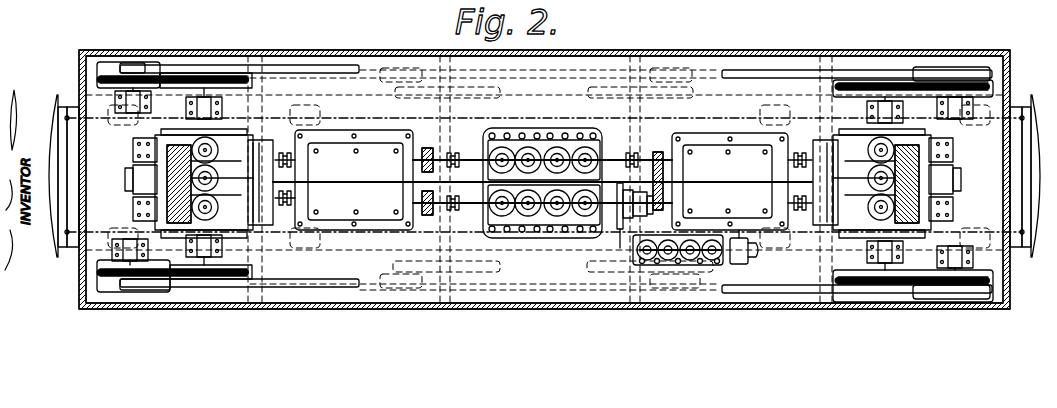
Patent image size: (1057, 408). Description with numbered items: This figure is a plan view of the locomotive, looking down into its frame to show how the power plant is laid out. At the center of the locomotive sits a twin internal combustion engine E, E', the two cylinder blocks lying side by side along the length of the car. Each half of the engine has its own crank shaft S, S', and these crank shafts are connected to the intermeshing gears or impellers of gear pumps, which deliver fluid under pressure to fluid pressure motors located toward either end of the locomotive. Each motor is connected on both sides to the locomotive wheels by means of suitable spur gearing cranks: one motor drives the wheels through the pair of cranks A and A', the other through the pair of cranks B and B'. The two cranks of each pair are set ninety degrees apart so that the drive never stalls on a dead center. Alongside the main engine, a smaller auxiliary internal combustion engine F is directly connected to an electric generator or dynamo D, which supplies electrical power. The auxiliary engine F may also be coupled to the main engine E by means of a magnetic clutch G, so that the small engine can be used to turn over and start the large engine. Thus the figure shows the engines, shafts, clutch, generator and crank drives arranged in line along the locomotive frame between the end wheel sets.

The spur gearing crank A' is at (228, 68).
The spur gearing crank A is at (228, 288).
The spur gearing crank B' is at (857, 74).
The spur gearing crank B is at (857, 293).
The internal combustion engine E' is at (542, 163).
The internal combustion engine E is at (544, 230).
The crank shaft S' is at (542, 145).
The crank shaft S is at (542, 214).
The magnetic clutch G is at (627, 210).
The auxiliary internal combustion engine F is at (633, 253).
The electric generator or dynamo D is at (758, 253).